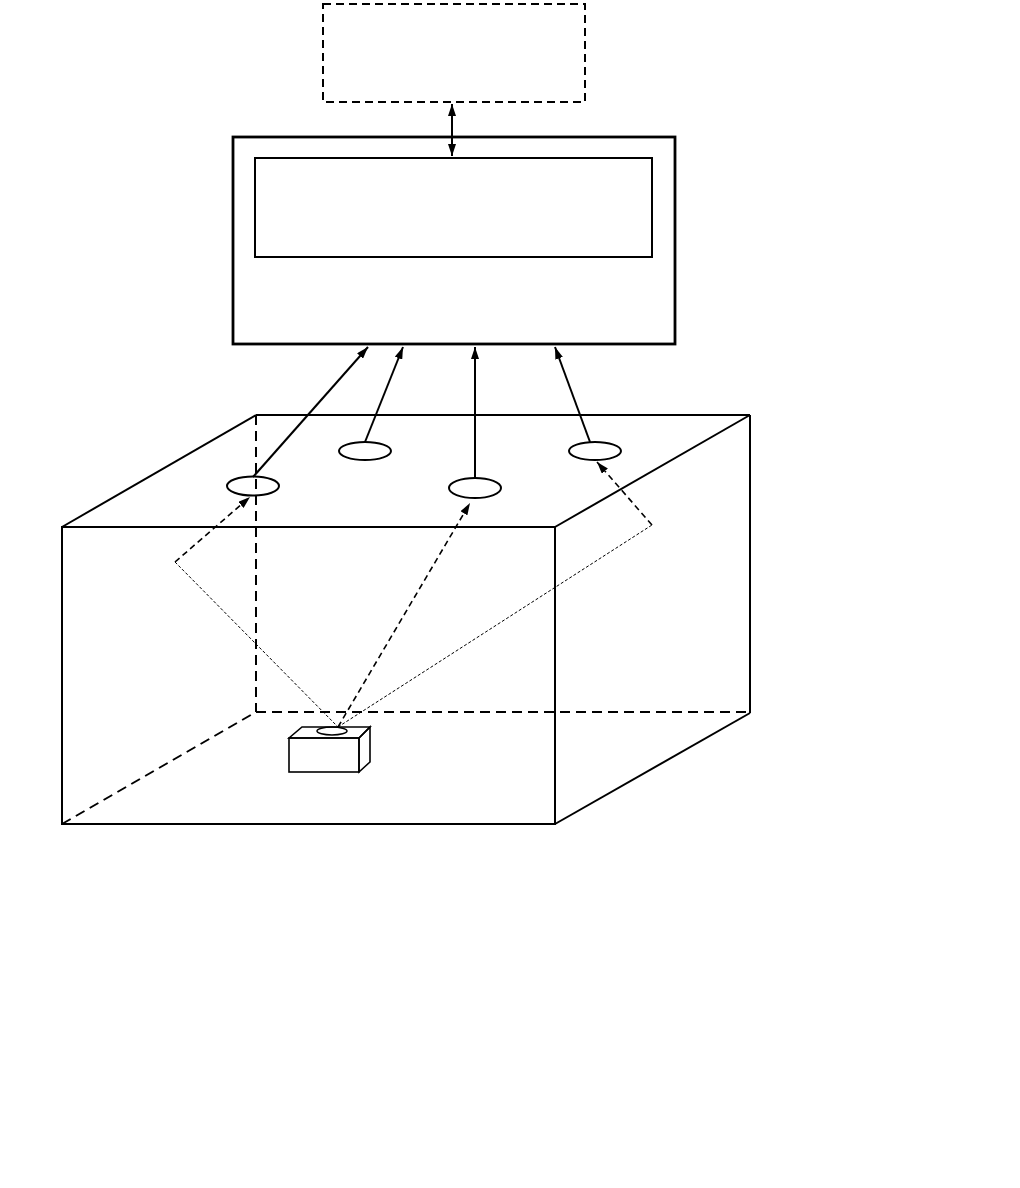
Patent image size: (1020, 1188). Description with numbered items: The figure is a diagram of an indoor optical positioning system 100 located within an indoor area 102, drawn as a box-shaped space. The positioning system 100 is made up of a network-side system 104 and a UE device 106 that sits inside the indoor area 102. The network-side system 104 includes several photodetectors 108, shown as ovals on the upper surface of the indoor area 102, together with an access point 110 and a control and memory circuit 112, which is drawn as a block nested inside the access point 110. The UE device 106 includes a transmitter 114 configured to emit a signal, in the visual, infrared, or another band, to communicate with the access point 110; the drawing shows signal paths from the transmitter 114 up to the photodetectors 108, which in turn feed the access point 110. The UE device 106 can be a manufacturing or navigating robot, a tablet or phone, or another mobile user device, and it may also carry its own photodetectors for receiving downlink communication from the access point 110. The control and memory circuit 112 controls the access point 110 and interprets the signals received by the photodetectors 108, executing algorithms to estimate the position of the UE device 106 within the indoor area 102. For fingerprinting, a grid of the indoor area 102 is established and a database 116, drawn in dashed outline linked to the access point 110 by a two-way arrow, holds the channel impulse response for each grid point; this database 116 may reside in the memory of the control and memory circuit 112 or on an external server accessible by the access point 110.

The positioning system 100 is at (784, 300).
The indoor area 102 is at (702, 637).
The network-side system 104 is at (185, 318).
The UE device 106 is at (377, 800).
The photodetectors 108 is at (340, 451).
The access point 110 is at (642, 296).
The control and memory circuit 112 is at (642, 192).
The transmitter 114 is at (367, 730).
The database 116 is at (577, 40).